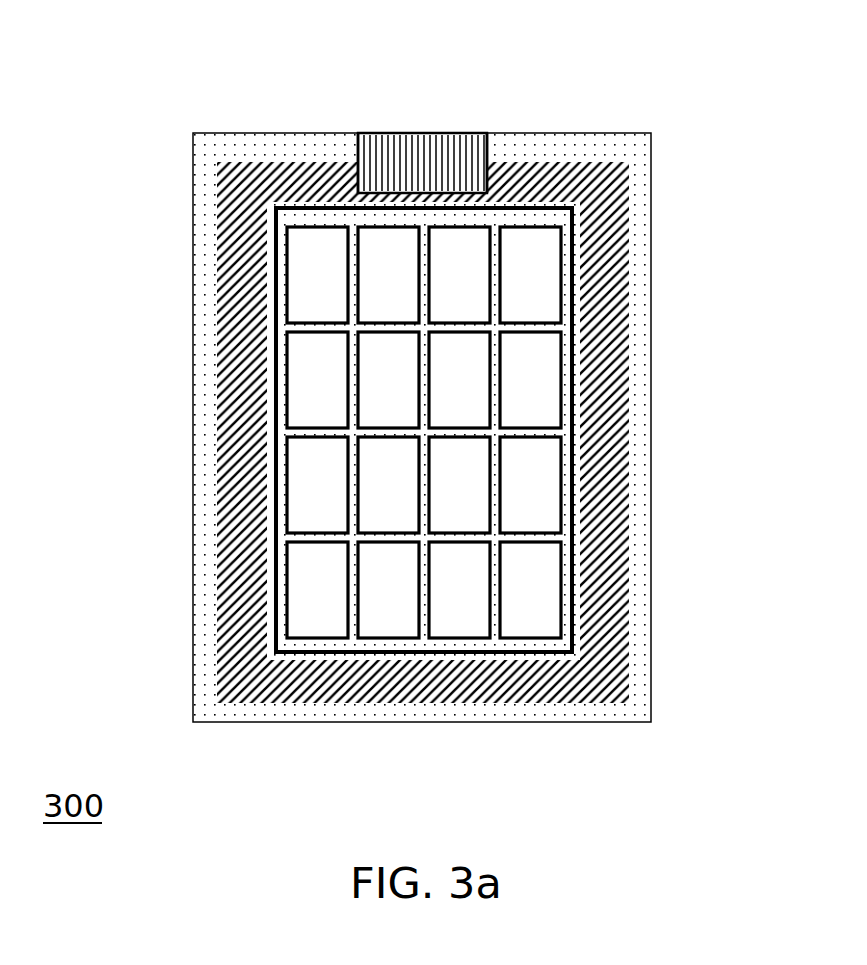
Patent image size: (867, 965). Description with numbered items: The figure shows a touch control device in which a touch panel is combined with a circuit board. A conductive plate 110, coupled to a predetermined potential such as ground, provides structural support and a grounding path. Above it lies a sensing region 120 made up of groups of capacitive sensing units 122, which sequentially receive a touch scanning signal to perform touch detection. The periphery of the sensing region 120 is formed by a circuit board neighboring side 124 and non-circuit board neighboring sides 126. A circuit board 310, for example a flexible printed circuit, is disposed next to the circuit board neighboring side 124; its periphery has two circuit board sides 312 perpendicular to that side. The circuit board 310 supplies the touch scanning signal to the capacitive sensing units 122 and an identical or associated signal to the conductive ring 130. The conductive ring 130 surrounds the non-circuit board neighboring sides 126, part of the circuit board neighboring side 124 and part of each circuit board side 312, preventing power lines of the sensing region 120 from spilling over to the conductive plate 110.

The conductive plate 110 is at (212, 147).
The sensing region 120 is at (542, 218).
The capacitive sensing units 122 is at (298, 273).
The circuit board neighboring side 124 is at (289, 207).
The non-circuit board neighboring sides 126 is at (273, 393).
The conductive ring 130 is at (240, 182).
The circuit board 310 is at (422, 143).
The circuit board sides 312 is at (357, 137).